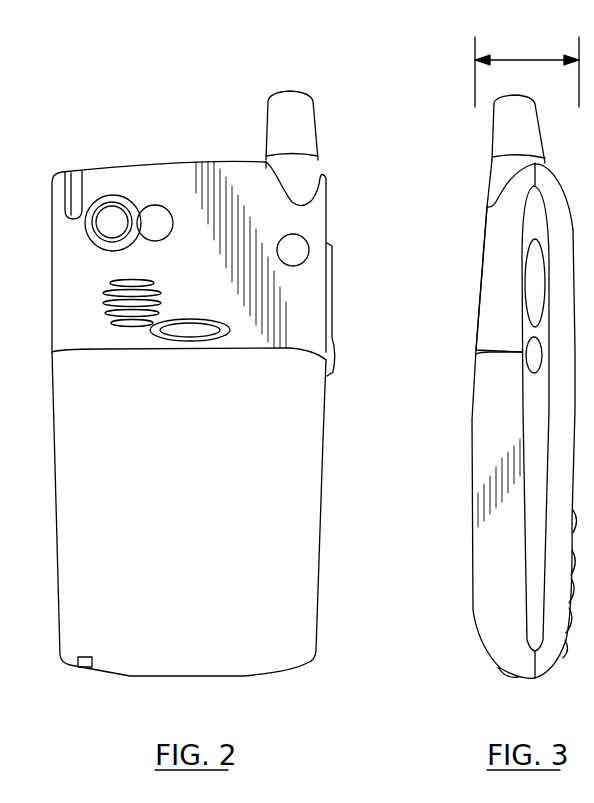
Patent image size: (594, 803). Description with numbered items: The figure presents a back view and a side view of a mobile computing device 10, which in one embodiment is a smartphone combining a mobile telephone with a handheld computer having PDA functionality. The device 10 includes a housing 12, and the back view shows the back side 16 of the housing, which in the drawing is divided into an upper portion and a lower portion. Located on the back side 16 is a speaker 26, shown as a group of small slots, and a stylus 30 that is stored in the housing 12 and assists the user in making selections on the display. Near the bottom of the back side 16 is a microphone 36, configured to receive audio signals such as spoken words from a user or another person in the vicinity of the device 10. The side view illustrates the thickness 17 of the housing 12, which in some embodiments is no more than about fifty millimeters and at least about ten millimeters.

In FIG. 2, the mobile computing device 10 is at (148, 133).
In FIG. 3, the mobile computing device 10 is at (460, 139).
In FIG. 3, the housing 12 is at (493, 250).
In FIG. 2, the back side 16 is at (197, 473).
In FIG. 3, the thickness 17 is at (536, 60).
In FIG. 2, the speaker 26 is at (105, 302).
In FIG. 2, the stylus 30 is at (72, 196).
In FIG. 2, the microphone 36 is at (85, 668).